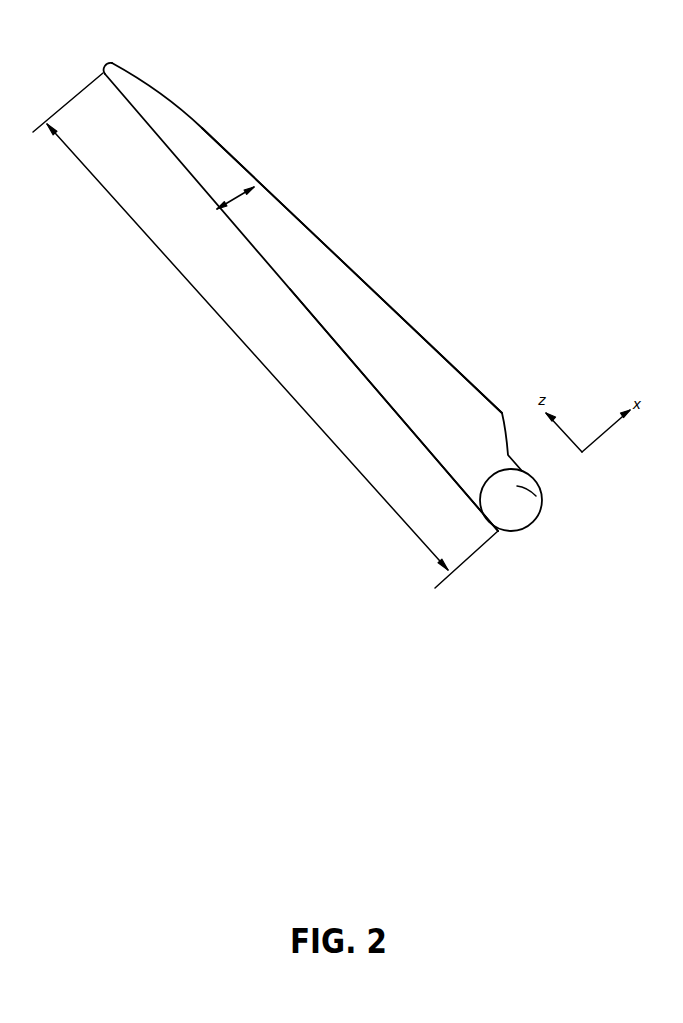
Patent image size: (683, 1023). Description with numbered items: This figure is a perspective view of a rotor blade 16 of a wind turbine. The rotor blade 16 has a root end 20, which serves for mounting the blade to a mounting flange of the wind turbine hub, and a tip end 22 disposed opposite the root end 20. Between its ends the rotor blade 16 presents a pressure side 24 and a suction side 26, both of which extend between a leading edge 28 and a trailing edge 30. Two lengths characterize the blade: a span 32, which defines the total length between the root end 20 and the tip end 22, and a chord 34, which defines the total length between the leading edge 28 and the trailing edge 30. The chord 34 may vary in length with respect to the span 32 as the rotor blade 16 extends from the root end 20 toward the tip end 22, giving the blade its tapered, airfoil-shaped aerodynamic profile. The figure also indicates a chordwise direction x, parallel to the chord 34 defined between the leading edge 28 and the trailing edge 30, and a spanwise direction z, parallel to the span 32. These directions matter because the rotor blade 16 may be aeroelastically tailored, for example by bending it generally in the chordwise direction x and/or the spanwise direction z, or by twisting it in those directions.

The rotor blade 16 is at (340, 270).
The root end 20 is at (530, 486).
The tip end 22 is at (110, 61).
The pressure side 24 is at (388, 375).
The suction side 26 is at (352, 288).
The leading edge 28 is at (259, 254).
The trailing edge 30 is at (202, 129).
The span 32 is at (227, 324).
The chord 34 is at (228, 200).